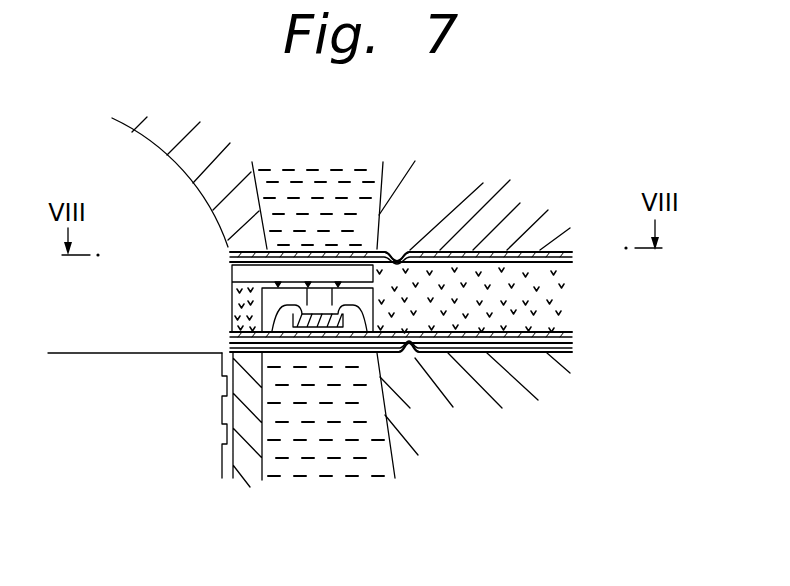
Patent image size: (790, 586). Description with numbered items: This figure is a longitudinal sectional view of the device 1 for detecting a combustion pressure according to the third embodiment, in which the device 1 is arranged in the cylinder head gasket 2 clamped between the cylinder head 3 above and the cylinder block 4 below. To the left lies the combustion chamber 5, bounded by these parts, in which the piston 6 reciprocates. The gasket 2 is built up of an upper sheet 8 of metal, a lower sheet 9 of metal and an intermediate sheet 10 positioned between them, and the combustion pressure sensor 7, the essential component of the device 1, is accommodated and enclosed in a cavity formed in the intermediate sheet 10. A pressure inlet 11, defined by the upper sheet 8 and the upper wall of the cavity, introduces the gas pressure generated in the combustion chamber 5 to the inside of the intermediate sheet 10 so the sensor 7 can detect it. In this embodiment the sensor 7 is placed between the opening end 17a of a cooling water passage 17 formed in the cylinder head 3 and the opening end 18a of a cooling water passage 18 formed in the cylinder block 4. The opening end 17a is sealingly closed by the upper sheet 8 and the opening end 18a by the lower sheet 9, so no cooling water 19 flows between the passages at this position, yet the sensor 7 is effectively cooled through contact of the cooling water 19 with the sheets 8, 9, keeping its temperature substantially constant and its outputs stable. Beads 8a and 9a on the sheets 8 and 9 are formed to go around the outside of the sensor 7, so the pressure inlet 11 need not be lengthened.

The device for detecting a pressure 1 is at (220, 311).
The cylinder head gasket 2 is at (598, 273).
The cylinder head 3 is at (452, 163).
The cylinder block 4 is at (505, 475).
The combustion chamber 5 is at (133, 248).
The piston 6 is at (131, 401).
The combustion pressure sensor 7 is at (277, 304).
The upper sheet 8 is at (572, 255).
The bead 8a is at (405, 250).
The lower sheet 9 is at (568, 342).
The bead 9a is at (410, 352).
The intermediate sheet 10 is at (550, 303).
The pressure inlet 11 is at (240, 272).
The cooling water passage 17 is at (260, 197).
The opening end 17a is at (362, 247).
The cooling water passage 18 is at (263, 470).
The opening end 18a is at (395, 438).
The cooling water 19 is at (317, 183).